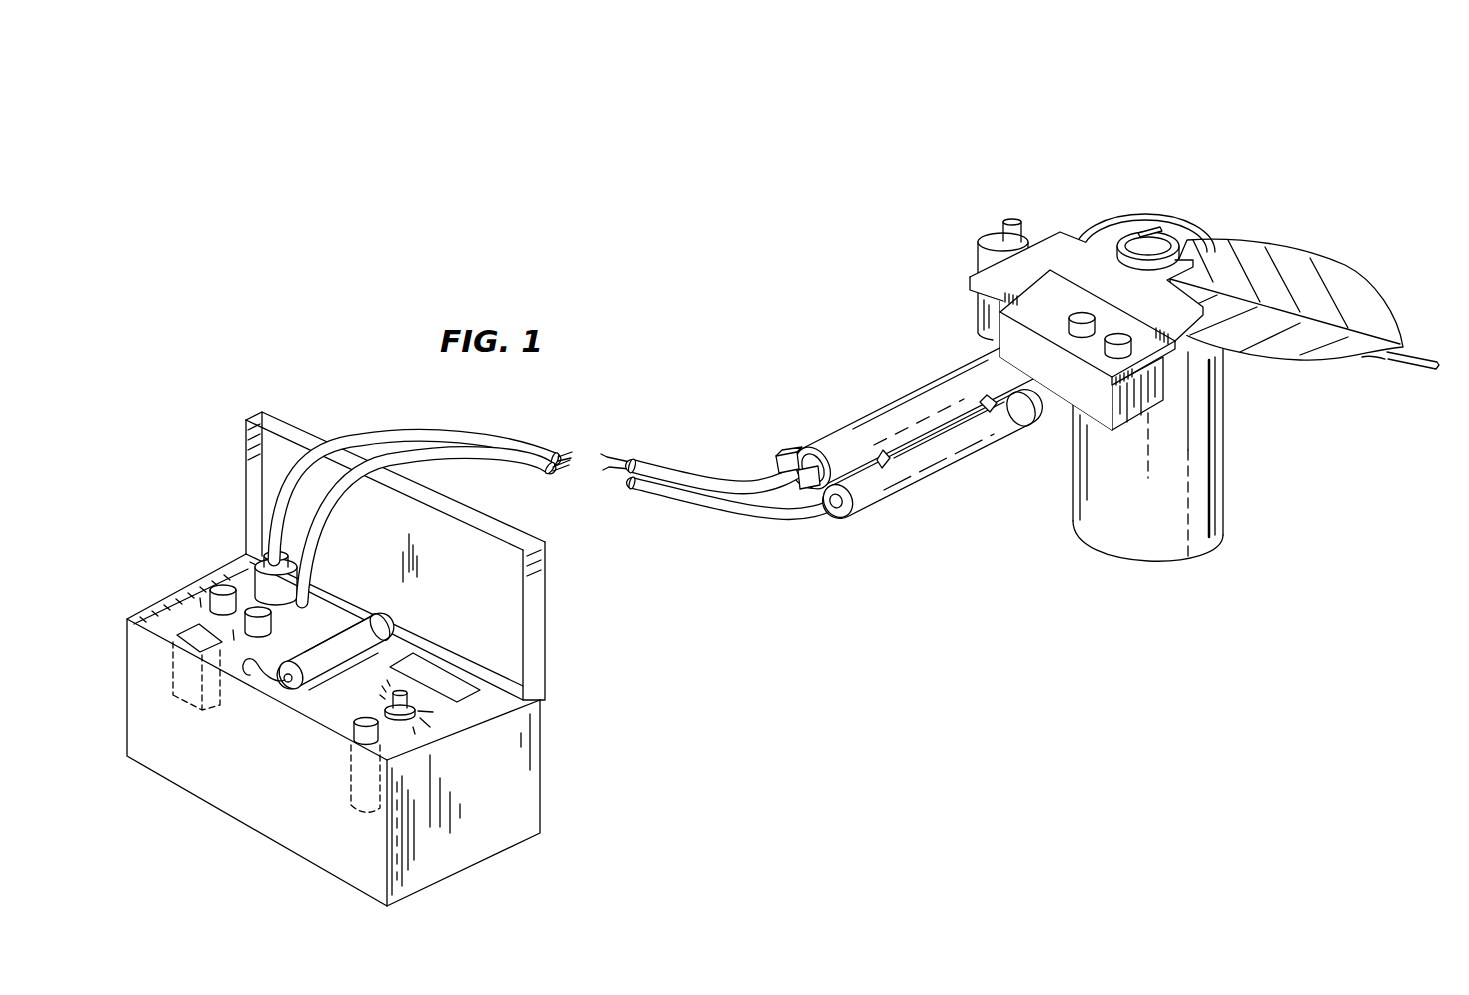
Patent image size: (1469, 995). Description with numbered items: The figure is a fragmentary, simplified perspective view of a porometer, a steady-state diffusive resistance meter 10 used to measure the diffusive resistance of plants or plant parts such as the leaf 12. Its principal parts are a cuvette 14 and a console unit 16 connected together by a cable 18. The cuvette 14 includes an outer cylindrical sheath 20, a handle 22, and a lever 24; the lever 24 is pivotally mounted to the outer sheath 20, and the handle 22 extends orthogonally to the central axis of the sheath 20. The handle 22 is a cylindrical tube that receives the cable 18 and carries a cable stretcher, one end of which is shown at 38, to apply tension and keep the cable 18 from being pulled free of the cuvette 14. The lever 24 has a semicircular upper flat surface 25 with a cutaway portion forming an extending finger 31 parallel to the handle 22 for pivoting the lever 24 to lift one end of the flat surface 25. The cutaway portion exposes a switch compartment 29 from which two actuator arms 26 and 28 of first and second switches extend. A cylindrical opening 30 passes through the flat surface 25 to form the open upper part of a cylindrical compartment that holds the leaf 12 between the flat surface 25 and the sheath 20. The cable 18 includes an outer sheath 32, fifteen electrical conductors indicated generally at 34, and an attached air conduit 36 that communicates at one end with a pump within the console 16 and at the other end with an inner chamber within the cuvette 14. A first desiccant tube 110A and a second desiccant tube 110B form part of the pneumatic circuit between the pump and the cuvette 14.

The steady-state diffusive resistance meter 10 is at (772, 317).
The leaf 12 is at (1333, 275).
The cuvette 14 is at (1219, 413).
The console unit 16 is at (336, 659).
The cable 18 is at (732, 493).
The outer cylindrical sheath 20 is at (1198, 472).
The handle 22 is at (880, 418).
The lever 24 is at (1078, 223).
The semicircular upper flat surface 25 is at (1107, 243).
The actuator arm 26 is at (1083, 312).
The actuator arm 28 is at (1121, 333).
The switch compartment 29 is at (1143, 382).
The cylindrical opening 30 is at (1158, 230).
The extending finger 31 is at (978, 258).
The outer sheath 32 is at (700, 482).
The electrical conductors 34 is at (572, 457).
The air conduit 36 is at (338, 503).
The cable stretcher 38 is at (771, 452).
The first desiccant tube 110A is at (317, 657).
The second desiccant tube 110B is at (937, 463).